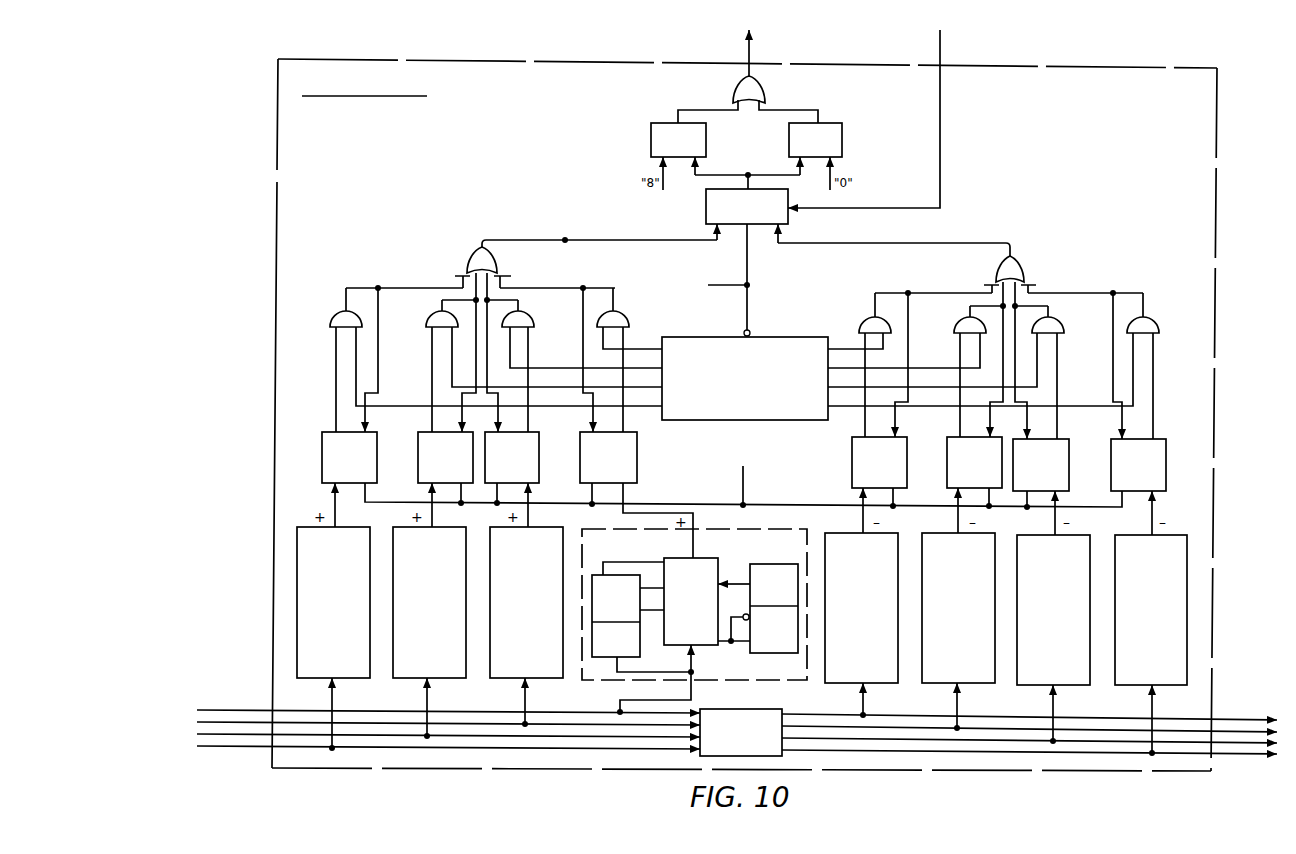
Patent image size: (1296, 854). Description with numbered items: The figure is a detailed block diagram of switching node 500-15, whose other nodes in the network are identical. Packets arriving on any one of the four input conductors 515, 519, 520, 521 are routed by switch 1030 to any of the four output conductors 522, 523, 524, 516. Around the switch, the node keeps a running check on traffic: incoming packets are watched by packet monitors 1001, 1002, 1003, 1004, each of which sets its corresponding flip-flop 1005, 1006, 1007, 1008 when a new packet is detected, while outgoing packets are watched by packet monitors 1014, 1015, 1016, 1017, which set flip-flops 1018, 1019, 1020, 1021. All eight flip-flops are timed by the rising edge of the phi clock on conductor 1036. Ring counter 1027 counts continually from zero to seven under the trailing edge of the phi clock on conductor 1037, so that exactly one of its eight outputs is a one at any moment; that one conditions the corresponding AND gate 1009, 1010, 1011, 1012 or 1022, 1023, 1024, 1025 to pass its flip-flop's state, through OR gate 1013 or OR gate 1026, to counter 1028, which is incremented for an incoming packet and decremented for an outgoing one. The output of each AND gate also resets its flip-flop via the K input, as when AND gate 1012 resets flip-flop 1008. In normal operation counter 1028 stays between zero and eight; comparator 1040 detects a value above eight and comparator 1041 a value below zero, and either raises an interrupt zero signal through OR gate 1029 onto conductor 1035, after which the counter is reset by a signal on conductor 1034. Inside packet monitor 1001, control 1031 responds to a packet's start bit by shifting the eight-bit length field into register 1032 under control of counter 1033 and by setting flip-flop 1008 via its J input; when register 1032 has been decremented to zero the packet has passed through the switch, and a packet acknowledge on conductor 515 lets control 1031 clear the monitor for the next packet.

The switching node 500-15 is at (1222, 55).
The input conductor 515 is at (262, 710).
The input conductor 519 is at (250, 722).
The input conductor 520 is at (250, 735).
The input conductor 521 is at (262, 747).
The output conductor 522 is at (1225, 719).
The output conductor 523 is at (1237, 731).
The output conductor 524 is at (1232, 743).
The output conductor 516 is at (1222, 754).
The packet monitor 1001 is at (620, 686).
The packet monitor 1002 is at (328, 680).
The packet monitor 1003 is at (425, 680).
The packet monitor 1004 is at (523, 680).
The flip-flop 1005 is at (324, 434).
The flip-flop 1006 is at (422, 434).
The flip-flop 1007 is at (537, 434).
The flip-flop 1008 is at (638, 445).
The AND gate 1009 is at (332, 316).
The AND gate 1010 is at (431, 316).
The AND gate 1011 is at (531, 315).
The AND gate 1012 is at (626, 316).
The OR gate 1013 is at (470, 264).
The packet monitor 1014 is at (870, 684).
The packet monitor 1015 is at (966, 684).
The packet monitor 1016 is at (1061, 686).
The packet monitor 1017 is at (1158, 686).
The flip-flop 1018 is at (852, 445).
The flip-flop 1019 is at (954, 438).
The flip-flop 1020 is at (1066, 440).
The flip-flop 1021 is at (1164, 440).
The AND gate 1022 is at (862, 322).
The AND gate 1023 is at (958, 323).
The AND gate 1024 is at (1059, 322).
The AND gate 1025 is at (1154, 322).
The OR gate 1026 is at (1021, 267).
The ring counter 1027 is at (786, 337).
The counter 1028 is at (706, 213).
The OR gate 1029 is at (762, 90).
The switch 1030 is at (737, 709).
The control 1031 is at (700, 648).
The register 1032 is at (640, 655).
The counter 1033 is at (767, 653).
The conductor 1034 is at (960, 50).
The conductor 1035 is at (768, 50).
The conductor 1036 is at (744, 487).
The conductor 1037 is at (728, 285).
The comparator 1040 is at (651, 140).
The comparator 1041 is at (842, 140).